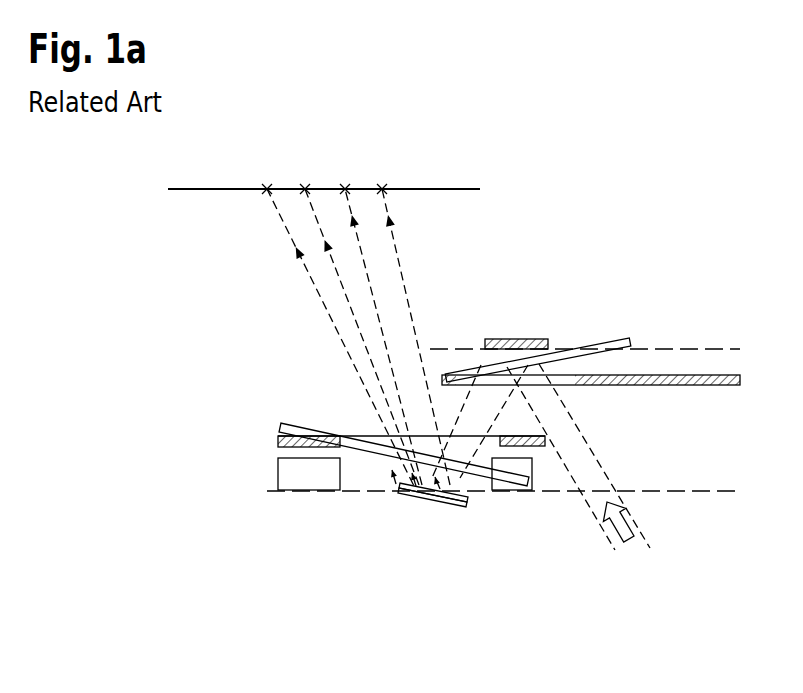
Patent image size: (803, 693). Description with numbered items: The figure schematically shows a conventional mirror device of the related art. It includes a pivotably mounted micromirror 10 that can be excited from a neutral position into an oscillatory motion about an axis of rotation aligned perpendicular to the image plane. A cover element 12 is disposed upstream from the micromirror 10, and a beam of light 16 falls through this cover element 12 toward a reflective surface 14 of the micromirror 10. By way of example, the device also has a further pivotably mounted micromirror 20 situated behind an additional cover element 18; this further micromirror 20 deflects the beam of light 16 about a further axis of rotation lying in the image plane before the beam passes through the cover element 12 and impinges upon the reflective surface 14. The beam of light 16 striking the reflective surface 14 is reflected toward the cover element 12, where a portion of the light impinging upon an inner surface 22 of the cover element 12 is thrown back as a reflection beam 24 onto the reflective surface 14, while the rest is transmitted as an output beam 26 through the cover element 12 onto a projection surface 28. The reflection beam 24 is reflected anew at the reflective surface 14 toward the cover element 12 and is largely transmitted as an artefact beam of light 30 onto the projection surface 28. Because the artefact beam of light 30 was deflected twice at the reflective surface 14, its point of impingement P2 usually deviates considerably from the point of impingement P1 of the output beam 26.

The micromirror 10 is at (435, 500).
The cover element 12 is at (505, 490).
The reflective surface 14 is at (473, 489).
The beam of light 16 is at (627, 523).
The additional cover element 18 is at (628, 338).
The further micromirror 20 is at (517, 338).
The inner surface 22 is at (358, 455).
The reflection beam 24 is at (407, 497).
The output beam 26 is at (361, 250).
The projection surface 28 is at (188, 191).
The artefact beam of light 30 is at (347, 298).
The point of impingement P1 is at (382, 187).
The point of impingement P2 is at (305, 187).